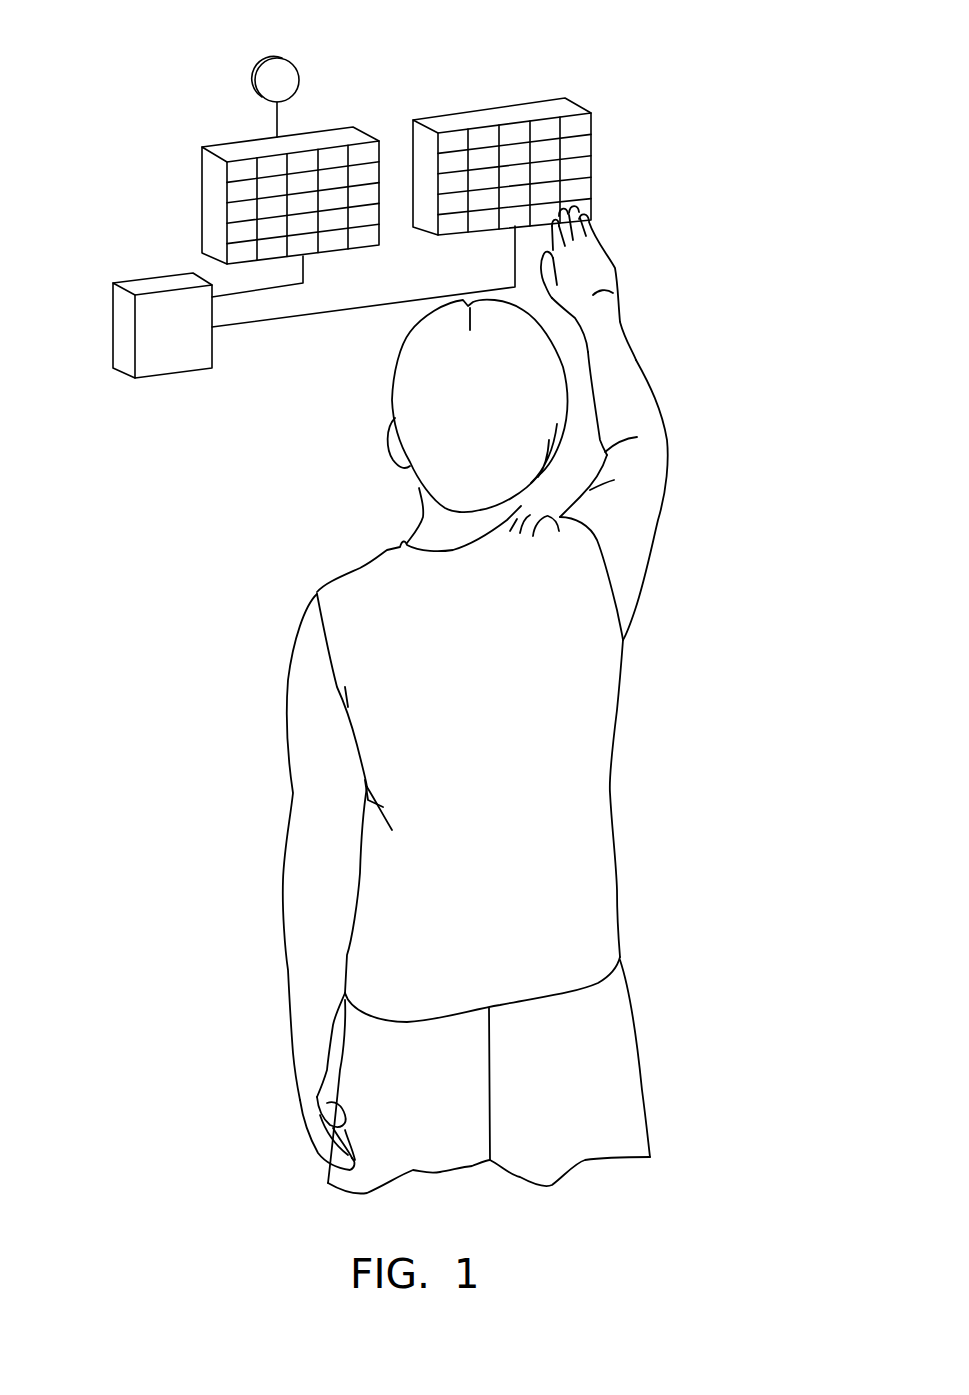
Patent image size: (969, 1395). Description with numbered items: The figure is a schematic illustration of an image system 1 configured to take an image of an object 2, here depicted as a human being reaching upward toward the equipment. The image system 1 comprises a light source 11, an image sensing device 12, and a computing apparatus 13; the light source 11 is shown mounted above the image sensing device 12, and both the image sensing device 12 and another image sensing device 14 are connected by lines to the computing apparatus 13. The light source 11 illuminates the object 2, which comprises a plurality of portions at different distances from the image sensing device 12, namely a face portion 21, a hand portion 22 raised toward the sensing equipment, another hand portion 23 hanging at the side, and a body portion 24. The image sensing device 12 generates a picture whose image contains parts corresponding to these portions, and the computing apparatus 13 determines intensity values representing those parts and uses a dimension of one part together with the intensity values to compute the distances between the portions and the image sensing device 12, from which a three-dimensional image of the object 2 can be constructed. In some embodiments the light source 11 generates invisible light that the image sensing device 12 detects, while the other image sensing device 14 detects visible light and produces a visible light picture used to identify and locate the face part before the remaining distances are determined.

The image system 1 is at (147, 60).
The light source 11 is at (300, 72).
The image sensing device 12 is at (202, 197).
The computing apparatus 13 is at (112, 325).
The another image sensing device 14 is at (595, 162).
The object 2 is at (667, 563).
The face portion 21 is at (370, 468).
The hand portion 22 is at (618, 255).
The another hand portion 23 is at (290, 1143).
The body portion 24 is at (618, 735).